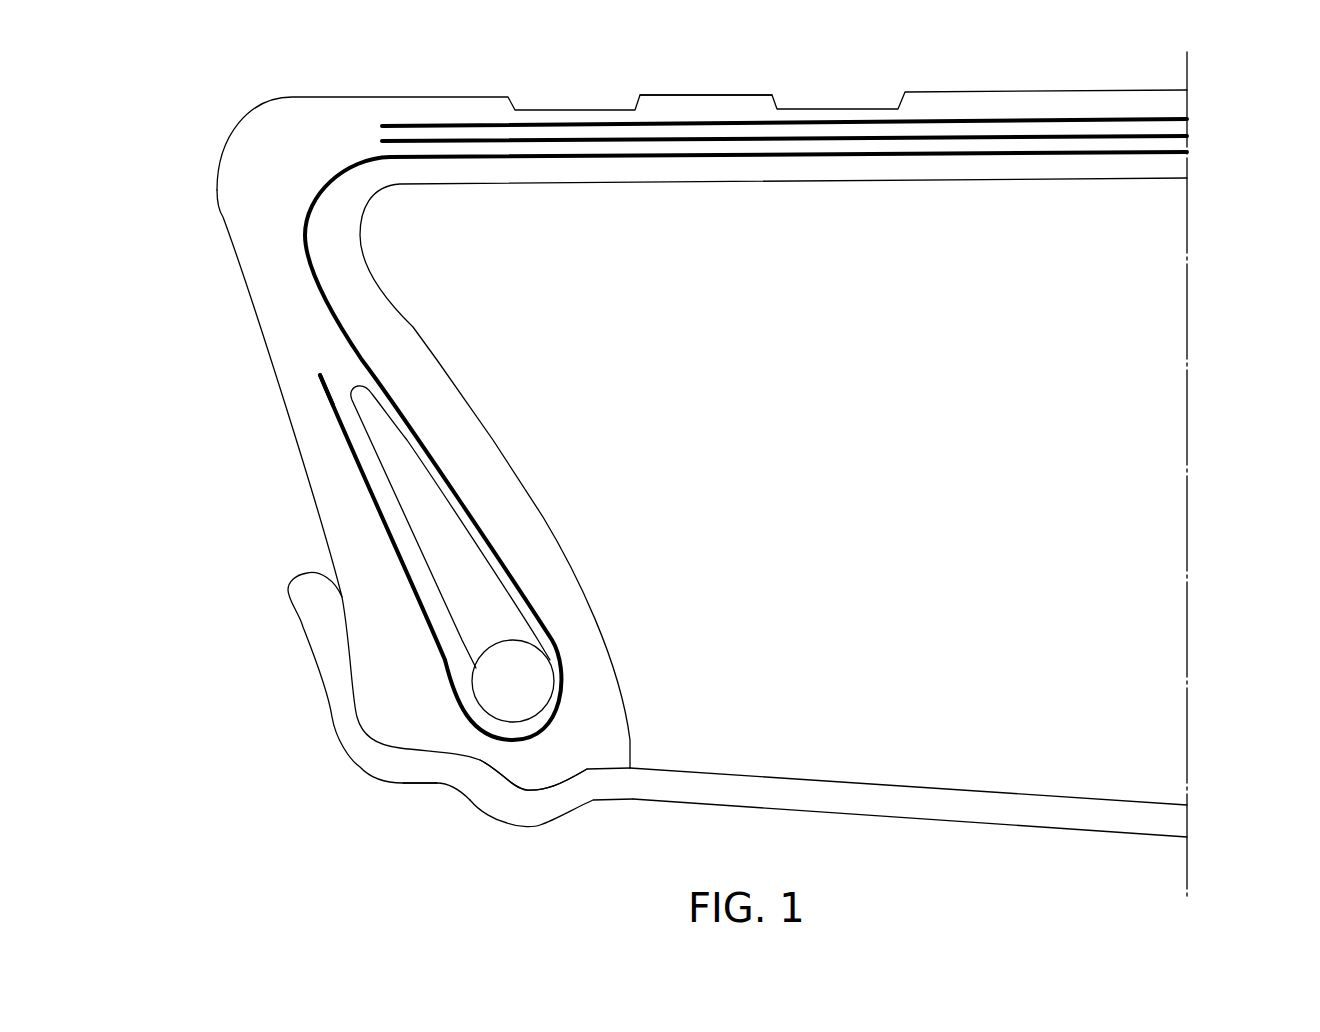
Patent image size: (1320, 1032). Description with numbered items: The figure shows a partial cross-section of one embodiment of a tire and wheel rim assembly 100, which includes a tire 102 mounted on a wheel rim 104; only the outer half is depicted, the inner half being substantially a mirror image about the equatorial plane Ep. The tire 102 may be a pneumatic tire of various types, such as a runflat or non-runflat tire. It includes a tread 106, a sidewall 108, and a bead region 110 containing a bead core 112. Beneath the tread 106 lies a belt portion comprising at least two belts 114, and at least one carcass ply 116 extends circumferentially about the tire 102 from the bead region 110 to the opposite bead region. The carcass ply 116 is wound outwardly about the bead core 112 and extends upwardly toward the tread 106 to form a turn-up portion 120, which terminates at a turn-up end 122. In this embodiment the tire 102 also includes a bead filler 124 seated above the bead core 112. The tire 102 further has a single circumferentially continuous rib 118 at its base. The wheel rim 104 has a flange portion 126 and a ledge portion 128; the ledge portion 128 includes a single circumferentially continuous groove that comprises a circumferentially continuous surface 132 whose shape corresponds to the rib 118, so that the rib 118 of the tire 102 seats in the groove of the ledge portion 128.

The tire and wheel rim assembly 100 is at (131, 113).
The tire 102 is at (254, 140).
The wheel rim 104 is at (1057, 807).
The tread 106 is at (710, 110).
The sidewall 108 is at (323, 465).
The bead region 110 is at (599, 581).
The bead core 112 is at (540, 683).
The belts 114 is at (1115, 117).
The carcass ply 116 is at (340, 330).
The single circumferentially continuous rib 118 is at (523, 767).
The turn-up portion 120 is at (383, 500).
The turn-up end 122 is at (317, 382).
The bead filler 124 is at (475, 555).
The flange portion 126 is at (332, 655).
The ledge portion 128 is at (402, 767).
The circumferentially continuous surface 132 is at (528, 788).
The equatorial plane Ep is at (1187, 228).